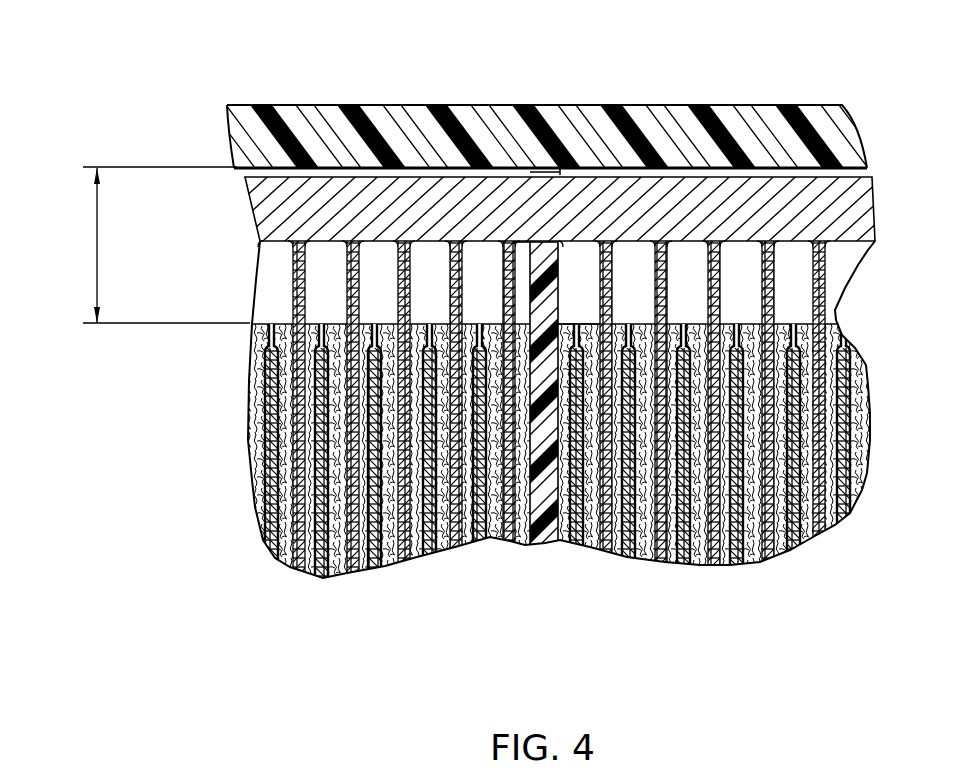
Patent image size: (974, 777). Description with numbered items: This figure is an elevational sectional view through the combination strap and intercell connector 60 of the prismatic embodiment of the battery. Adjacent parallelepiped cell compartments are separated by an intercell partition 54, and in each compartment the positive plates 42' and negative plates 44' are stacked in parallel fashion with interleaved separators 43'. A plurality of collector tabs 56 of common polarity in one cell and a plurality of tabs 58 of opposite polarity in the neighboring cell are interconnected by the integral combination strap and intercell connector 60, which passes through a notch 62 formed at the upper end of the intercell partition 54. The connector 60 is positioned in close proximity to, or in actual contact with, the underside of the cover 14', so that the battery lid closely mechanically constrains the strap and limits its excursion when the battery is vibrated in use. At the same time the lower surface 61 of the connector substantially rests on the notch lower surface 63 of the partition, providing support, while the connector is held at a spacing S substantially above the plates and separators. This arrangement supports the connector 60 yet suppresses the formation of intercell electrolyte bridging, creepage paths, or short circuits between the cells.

The cover 14' is at (524, 102).
The notch 62 is at (560, 171).
The combination strap and intercell connector 60 is at (675, 188).
The lower surface of the connector 61 is at (530, 242).
The notch lower surface 63 is at (559, 253).
The collector tabs 56 is at (293, 273).
The separators 43' is at (541, 446).
The tabs 58 is at (825, 270).
The positive plates 42' is at (559, 442).
The negative plates 44' is at (557, 471).
The intercell partition 54 is at (540, 545).
The spacing dimension S is at (166, 245).